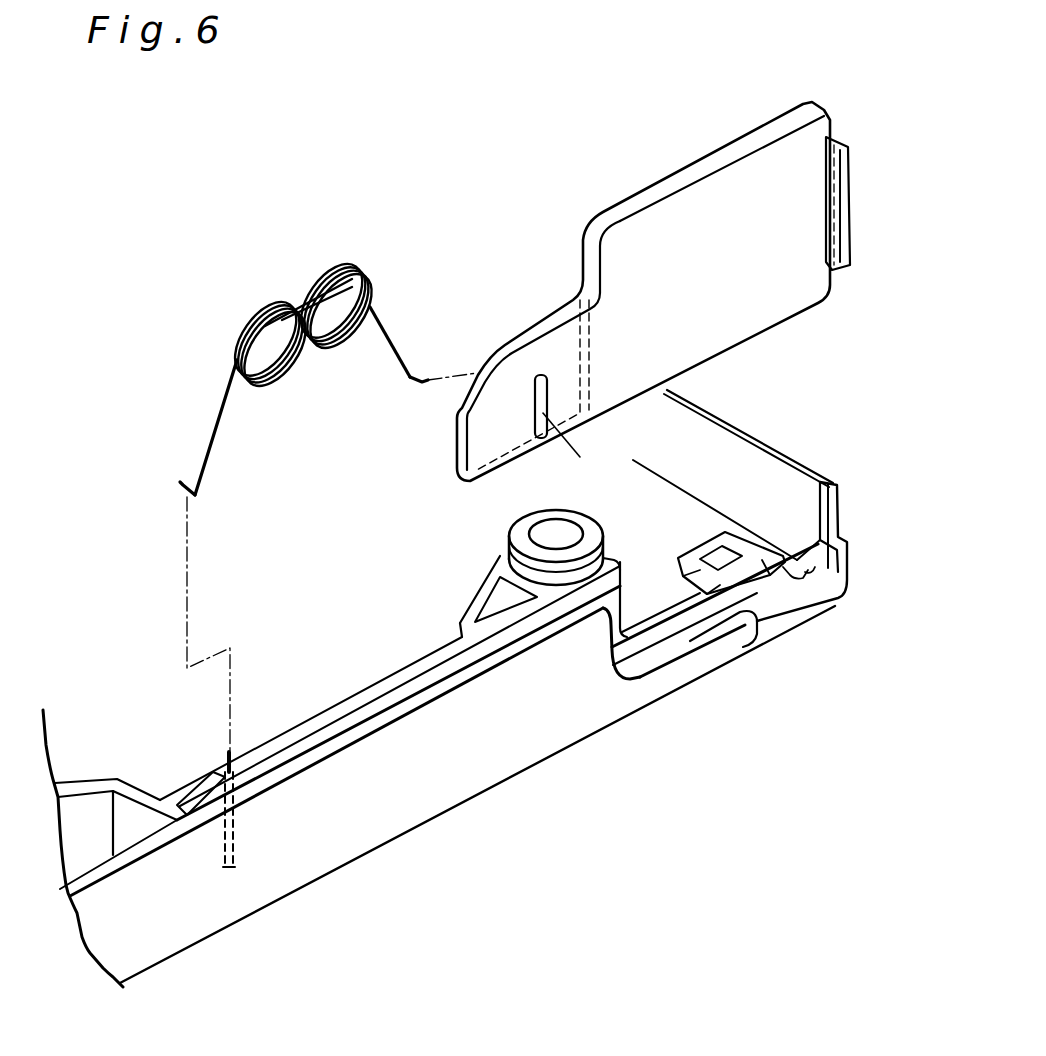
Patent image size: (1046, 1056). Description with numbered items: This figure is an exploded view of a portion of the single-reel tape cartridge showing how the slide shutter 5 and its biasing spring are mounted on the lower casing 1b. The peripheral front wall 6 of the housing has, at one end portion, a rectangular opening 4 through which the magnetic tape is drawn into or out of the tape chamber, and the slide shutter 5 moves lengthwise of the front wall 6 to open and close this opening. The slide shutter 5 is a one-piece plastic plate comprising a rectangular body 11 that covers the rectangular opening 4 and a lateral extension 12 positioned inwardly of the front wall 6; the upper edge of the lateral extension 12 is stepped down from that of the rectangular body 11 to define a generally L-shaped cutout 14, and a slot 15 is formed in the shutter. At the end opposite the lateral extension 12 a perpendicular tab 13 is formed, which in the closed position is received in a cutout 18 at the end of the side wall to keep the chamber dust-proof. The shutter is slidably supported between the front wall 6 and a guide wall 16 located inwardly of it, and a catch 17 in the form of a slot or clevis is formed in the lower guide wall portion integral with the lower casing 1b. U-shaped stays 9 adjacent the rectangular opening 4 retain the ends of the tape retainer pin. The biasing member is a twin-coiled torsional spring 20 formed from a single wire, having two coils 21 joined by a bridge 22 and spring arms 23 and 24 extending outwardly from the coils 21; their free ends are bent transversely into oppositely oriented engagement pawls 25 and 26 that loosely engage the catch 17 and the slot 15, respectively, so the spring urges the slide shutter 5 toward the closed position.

The lower casing 1b is at (343, 862).
The rectangular opening 4 is at (697, 637).
The slide shutter 5 is at (652, 168).
The front wall 6 is at (452, 752).
The stay 9 is at (762, 558).
The rectangular body 11 is at (750, 327).
The lateral extension 12 is at (456, 480).
The tab 13 is at (850, 212).
The L-shaped cutout 14 is at (550, 313).
The slot 15 is at (548, 410).
The guide wall 16 is at (390, 672).
The catch 17 is at (210, 780).
The cutout 18 is at (840, 513).
The twin-coiled torsional spring 20 is at (281, 334).
The coil 21 is at (300, 353).
The bridge 22 is at (293, 303).
The spring arm 23 is at (217, 398).
The spring arm 24 is at (392, 345).
The engagement pawl 25 is at (180, 482).
The engagement pawl 26 is at (423, 387).